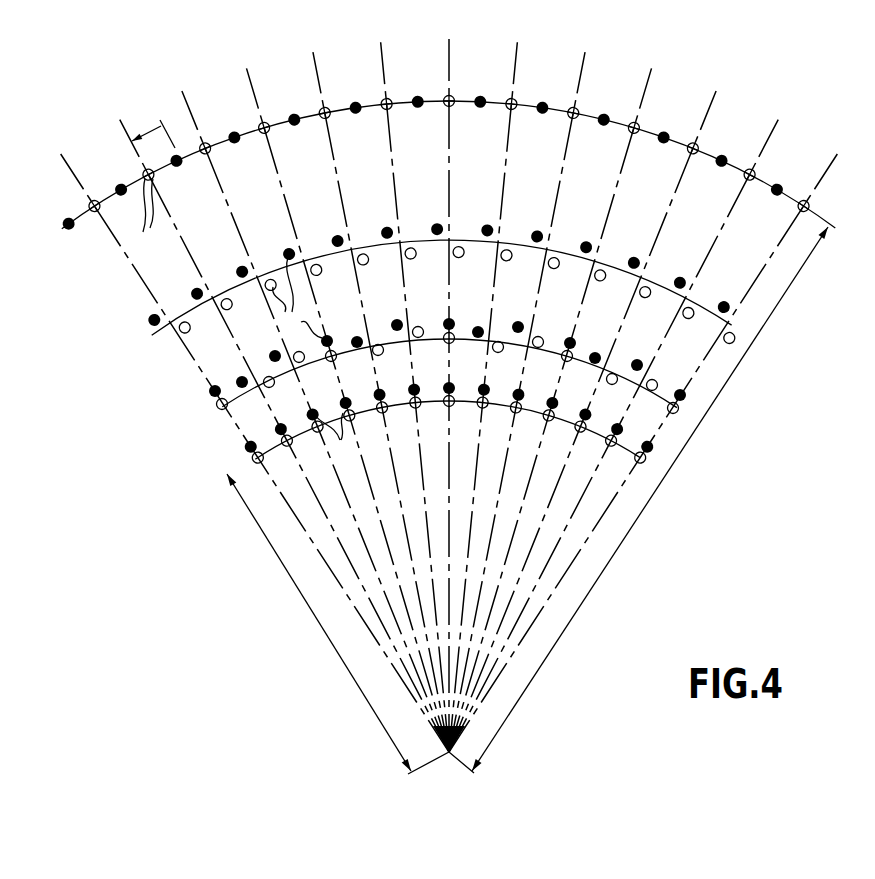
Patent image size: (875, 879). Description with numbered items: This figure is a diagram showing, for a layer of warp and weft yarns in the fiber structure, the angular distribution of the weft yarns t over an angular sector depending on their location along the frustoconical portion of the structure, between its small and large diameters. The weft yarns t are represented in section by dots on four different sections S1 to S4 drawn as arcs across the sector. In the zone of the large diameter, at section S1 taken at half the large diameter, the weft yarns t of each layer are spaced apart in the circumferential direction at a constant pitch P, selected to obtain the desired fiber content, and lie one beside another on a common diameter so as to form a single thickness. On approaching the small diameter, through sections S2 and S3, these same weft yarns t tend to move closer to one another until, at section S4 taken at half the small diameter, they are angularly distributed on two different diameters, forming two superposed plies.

The section S1 is at (62, 229).
The section S2 is at (152, 335).
The section S3 is at (222, 407).
The section S4 is at (255, 459).
The pitch P is at (153, 128).
The weft yarns t is at (243, 321).